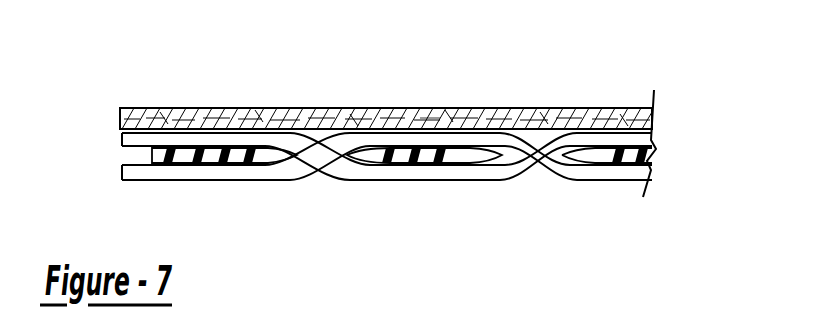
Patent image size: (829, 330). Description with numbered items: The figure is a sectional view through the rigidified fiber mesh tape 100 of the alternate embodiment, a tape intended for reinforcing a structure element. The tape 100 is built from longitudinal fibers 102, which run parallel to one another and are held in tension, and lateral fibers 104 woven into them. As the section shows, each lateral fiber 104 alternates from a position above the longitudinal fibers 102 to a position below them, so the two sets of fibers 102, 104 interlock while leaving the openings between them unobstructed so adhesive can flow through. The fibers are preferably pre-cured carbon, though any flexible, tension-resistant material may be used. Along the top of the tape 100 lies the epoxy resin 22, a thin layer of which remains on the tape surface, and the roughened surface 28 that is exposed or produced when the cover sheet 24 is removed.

The rigidified fiber mesh tape 100 is at (181, 54).
The epoxy resin 22 is at (337, 118).
The roughened surface 28 is at (429, 118).
The cover sheet 24 is at (653, 118).
The longitudinal fibers 102 is at (652, 157).
The lateral fibers 104 is at (122, 172).